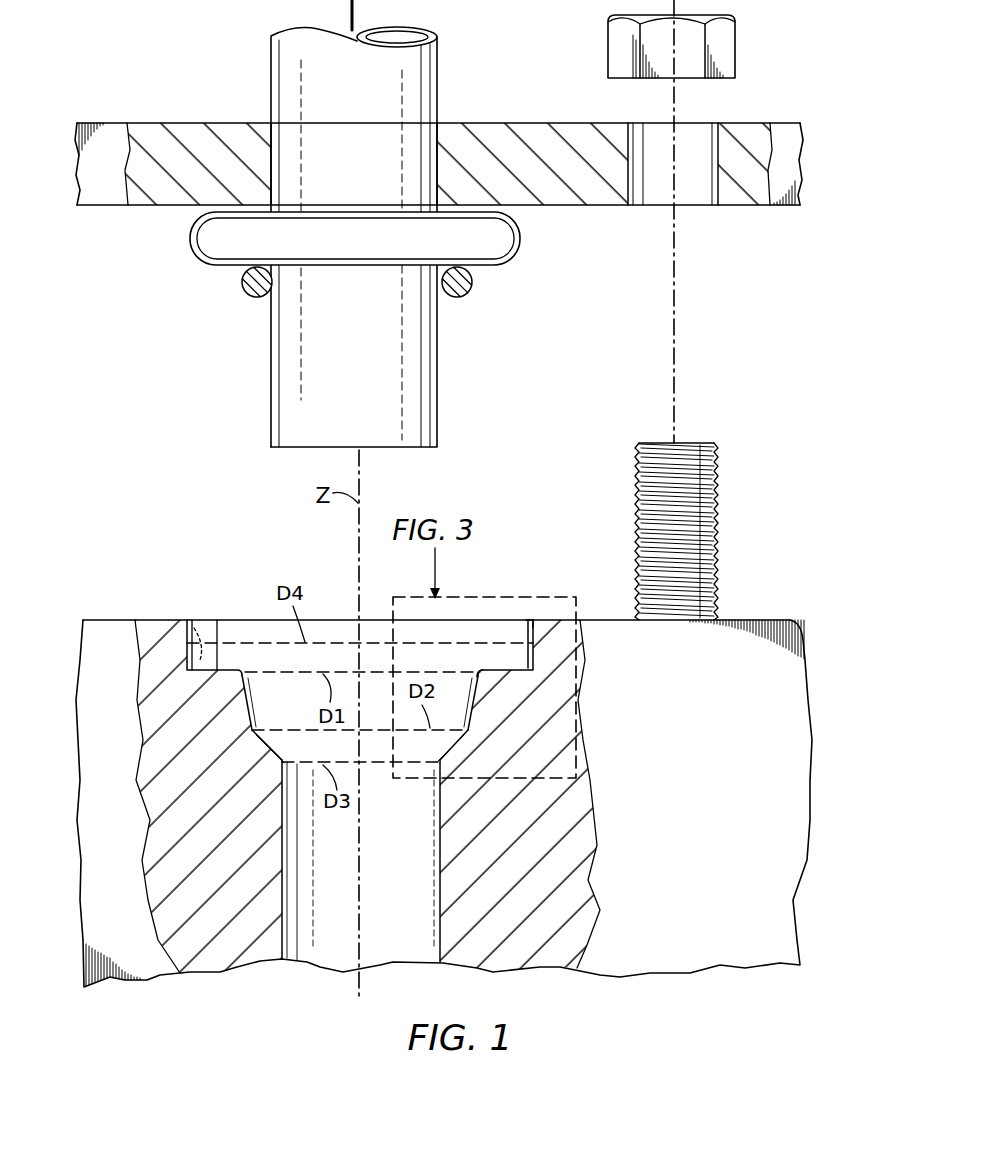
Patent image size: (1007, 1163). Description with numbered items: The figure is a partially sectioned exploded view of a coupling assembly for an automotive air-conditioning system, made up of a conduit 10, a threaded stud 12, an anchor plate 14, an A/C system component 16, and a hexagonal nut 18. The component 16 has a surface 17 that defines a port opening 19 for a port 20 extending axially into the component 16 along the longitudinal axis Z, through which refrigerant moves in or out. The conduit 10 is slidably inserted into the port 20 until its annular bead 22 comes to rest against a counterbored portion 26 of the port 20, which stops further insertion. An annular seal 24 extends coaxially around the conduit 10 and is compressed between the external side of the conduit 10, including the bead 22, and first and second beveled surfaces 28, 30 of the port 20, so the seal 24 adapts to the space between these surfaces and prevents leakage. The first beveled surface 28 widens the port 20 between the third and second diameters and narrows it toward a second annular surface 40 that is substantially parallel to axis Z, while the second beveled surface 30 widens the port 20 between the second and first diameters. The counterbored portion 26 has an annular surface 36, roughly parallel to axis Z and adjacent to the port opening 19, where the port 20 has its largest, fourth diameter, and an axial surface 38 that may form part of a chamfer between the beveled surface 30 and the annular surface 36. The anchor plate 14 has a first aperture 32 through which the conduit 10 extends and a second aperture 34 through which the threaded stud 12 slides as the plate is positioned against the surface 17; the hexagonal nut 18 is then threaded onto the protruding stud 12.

The conduit 10 is at (271, 70).
The threaded stud 12 is at (655, 446).
The anchor plate 14 is at (802, 150).
The A/C system component 16 is at (698, 795).
The surface 17 is at (108, 620).
The hexagonal nut 18 is at (735, 36).
The port opening 19 is at (232, 622).
The port 20 is at (388, 845).
The annular bead 22 is at (190, 240).
The annular seal 24 is at (241, 292).
The counterbored portion 26 is at (205, 658).
The first beveled surface 28 is at (265, 742).
The second beveled surface 30 is at (255, 707).
The first aperture 32 is at (443, 133).
The second aperture 34 is at (693, 192).
The annular surface 36 is at (527, 619).
The axial surface 38 is at (488, 668).
The second annular surface 40 is at (443, 898).